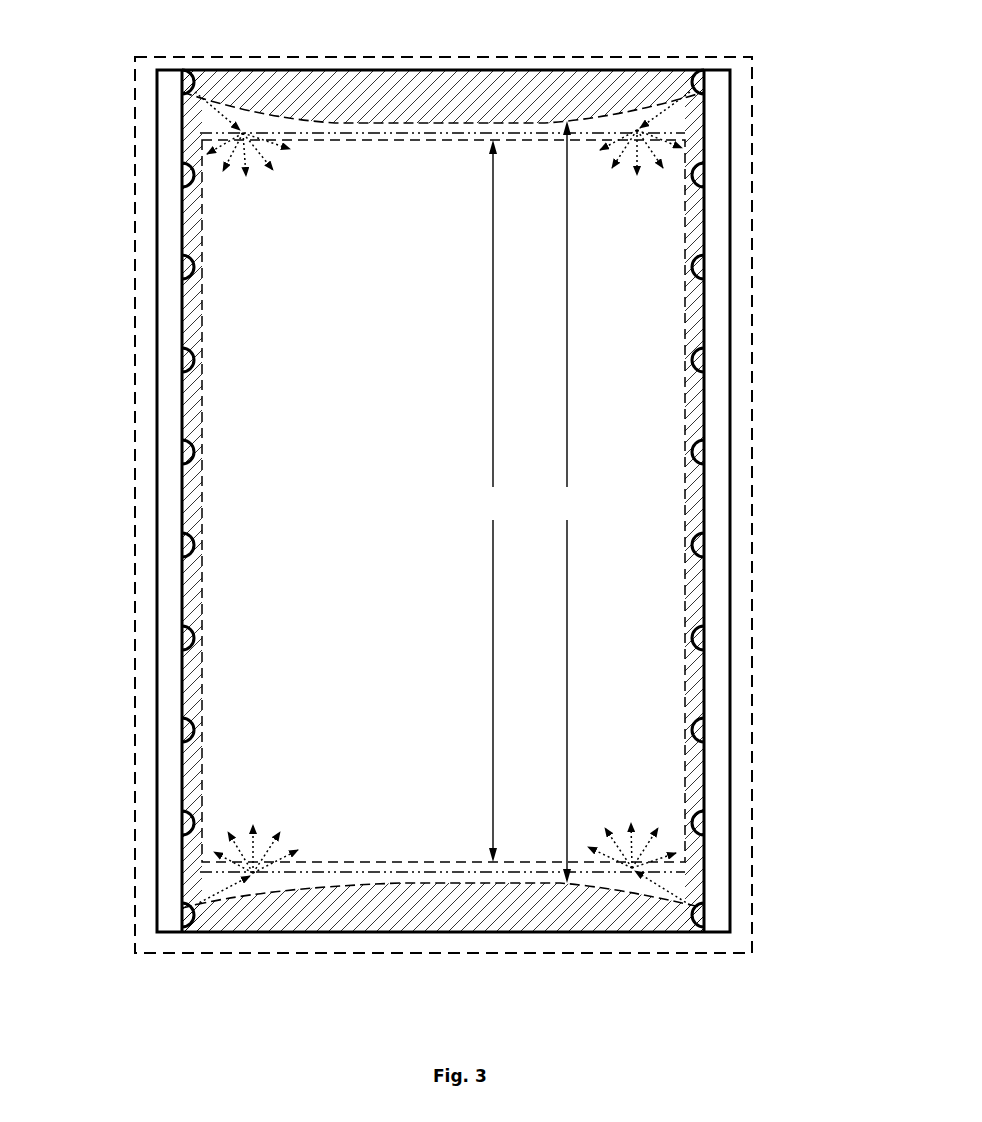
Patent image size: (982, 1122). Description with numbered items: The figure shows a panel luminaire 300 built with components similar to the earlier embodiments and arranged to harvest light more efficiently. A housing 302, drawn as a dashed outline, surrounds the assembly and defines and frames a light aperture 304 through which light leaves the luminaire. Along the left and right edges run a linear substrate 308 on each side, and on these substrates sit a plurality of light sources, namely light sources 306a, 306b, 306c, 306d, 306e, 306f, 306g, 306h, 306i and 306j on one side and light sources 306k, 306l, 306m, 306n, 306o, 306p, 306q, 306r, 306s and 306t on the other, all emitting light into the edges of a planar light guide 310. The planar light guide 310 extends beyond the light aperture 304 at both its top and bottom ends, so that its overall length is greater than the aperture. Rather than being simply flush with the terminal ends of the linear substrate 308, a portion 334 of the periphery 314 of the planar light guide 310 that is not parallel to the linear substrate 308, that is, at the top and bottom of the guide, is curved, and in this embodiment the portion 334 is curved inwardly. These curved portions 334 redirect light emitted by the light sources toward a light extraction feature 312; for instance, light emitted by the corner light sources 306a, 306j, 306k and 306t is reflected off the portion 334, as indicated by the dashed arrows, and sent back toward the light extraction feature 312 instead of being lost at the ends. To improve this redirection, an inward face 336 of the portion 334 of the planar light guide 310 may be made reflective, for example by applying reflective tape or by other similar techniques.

The panel luminaire 300 is at (780, 79).
The housing 302 is at (752, 285).
The light aperture 304 is at (443, 501).
The light source 306a is at (193, 76).
The light source 306b is at (183, 165).
The light source 306c is at (183, 257).
The light source 306d is at (183, 350).
The light source 306e is at (183, 442).
The light source 306f is at (183, 535).
The light source 306g is at (183, 628).
The light source 306h is at (183, 720).
The light source 306i is at (183, 813).
The light source 306j is at (183, 905).
The light source 306k is at (692, 78).
The light source 306l is at (704, 165).
The light source 306m is at (704, 257).
The light source 306n is at (704, 350).
The light source 306o is at (704, 442).
The light source 306p is at (704, 535).
The light source 306q is at (704, 628).
The light source 306r is at (704, 720).
The light source 306s is at (704, 813).
The light source 306t is at (704, 905).
The linear substrate 308 is at (183, 304).
The planar light guide 310 is at (569, 502).
The light extraction feature 312 is at (346, 128).
The periphery 314 is at (530, 122).
The portion 334 is at (381, 172).
The inward face 336 is at (447, 128).